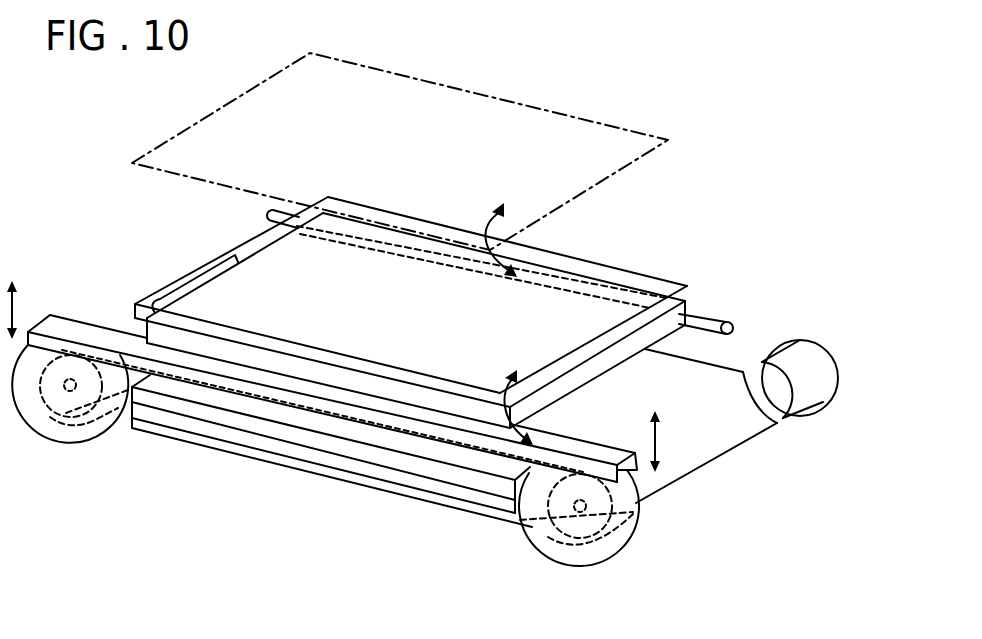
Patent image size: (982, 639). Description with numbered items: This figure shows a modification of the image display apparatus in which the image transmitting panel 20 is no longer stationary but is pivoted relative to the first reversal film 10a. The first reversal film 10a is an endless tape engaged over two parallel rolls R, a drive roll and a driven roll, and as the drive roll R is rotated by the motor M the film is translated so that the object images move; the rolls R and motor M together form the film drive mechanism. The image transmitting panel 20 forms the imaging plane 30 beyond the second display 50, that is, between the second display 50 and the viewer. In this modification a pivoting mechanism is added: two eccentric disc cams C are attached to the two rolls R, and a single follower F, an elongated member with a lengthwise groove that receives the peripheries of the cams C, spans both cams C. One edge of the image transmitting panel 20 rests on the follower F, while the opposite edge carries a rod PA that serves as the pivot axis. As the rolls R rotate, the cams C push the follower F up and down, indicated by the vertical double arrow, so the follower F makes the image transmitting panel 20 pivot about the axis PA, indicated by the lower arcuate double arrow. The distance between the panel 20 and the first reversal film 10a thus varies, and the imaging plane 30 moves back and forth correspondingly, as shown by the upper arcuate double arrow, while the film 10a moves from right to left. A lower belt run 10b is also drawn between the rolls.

The imaging plane 30 is at (633, 140).
The second display 50 is at (668, 287).
The image transmitting panel 20 is at (660, 335).
The rod PA is at (713, 317).
The motor M is at (800, 357).
The first reversal film 10a is at (680, 457).
The follower F is at (637, 468).
The belt 10b is at (273, 437).
The disc cam C is at (82, 428).
The roll R is at (63, 412).